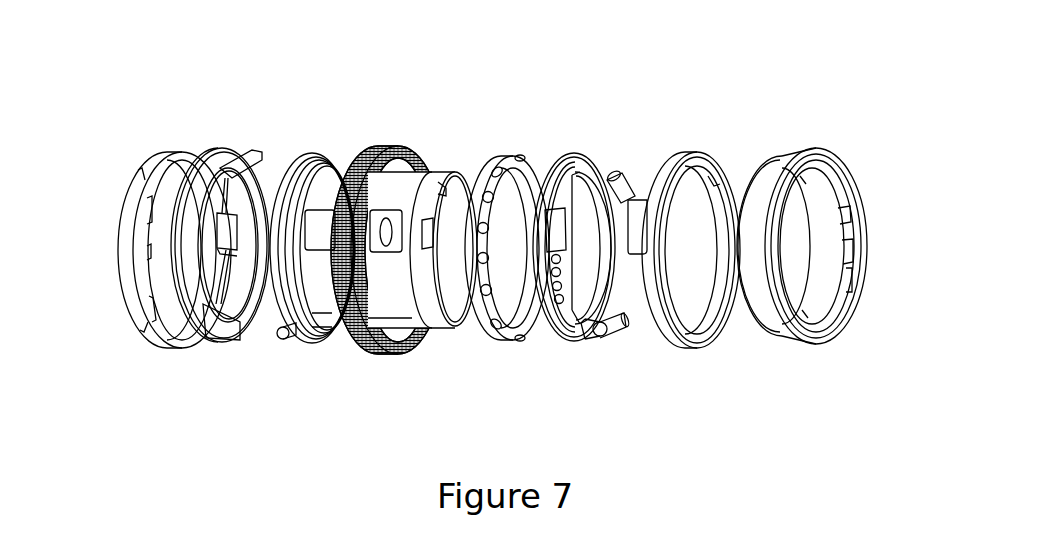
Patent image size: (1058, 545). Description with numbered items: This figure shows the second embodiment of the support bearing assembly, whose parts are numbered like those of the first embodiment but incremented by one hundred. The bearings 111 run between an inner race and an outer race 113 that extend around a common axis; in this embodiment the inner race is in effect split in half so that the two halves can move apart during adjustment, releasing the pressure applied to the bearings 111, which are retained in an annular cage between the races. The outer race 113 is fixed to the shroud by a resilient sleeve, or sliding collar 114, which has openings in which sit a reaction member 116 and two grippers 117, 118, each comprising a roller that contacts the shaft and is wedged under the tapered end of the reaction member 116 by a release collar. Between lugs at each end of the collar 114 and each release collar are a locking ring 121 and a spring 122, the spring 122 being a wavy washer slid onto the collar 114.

The bearings 111 is at (512, 160).
The outer race 113 is at (385, 150).
The resilient sleeve 114 is at (440, 160).
The reaction member 116 is at (313, 160).
The gripper 117 is at (284, 340).
The gripper 118 is at (617, 334).
The locking ring 121 is at (150, 160).
The spring 122 is at (210, 160).